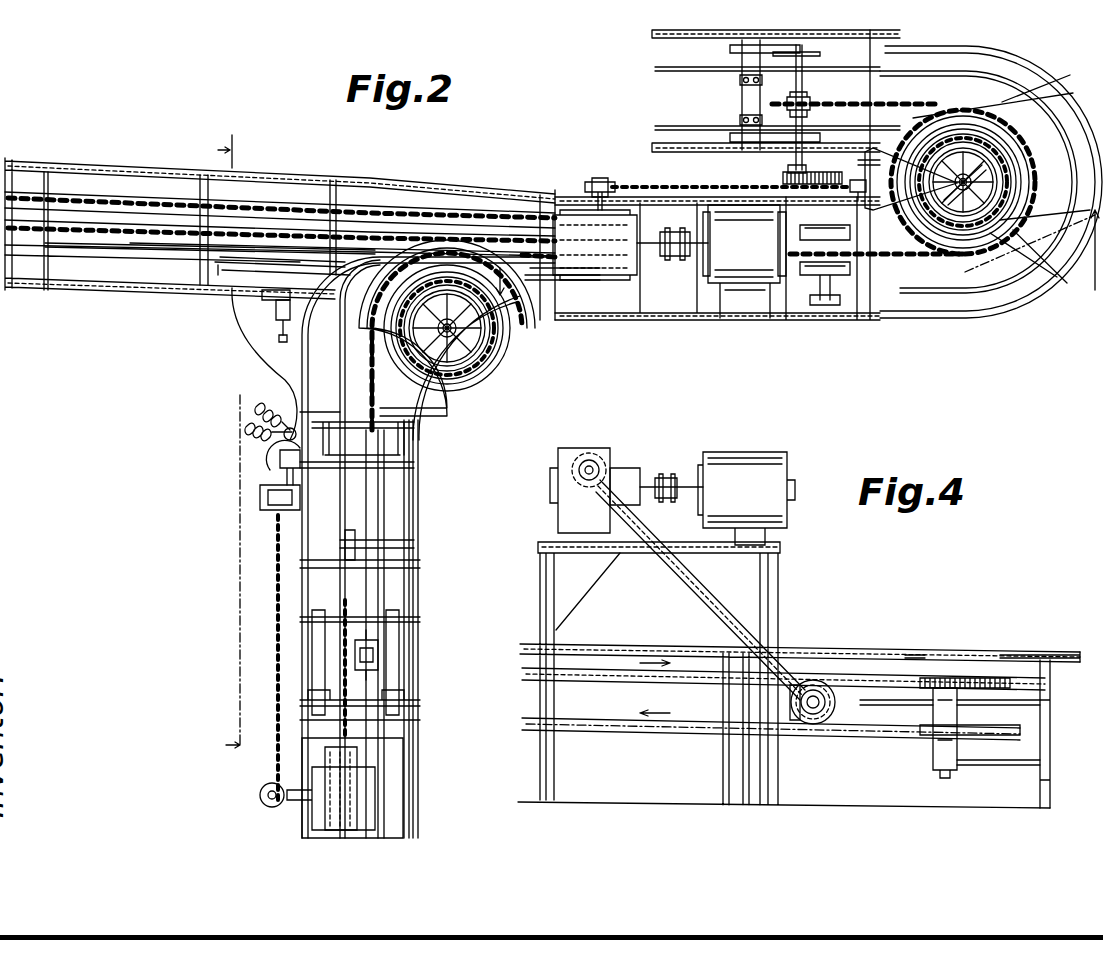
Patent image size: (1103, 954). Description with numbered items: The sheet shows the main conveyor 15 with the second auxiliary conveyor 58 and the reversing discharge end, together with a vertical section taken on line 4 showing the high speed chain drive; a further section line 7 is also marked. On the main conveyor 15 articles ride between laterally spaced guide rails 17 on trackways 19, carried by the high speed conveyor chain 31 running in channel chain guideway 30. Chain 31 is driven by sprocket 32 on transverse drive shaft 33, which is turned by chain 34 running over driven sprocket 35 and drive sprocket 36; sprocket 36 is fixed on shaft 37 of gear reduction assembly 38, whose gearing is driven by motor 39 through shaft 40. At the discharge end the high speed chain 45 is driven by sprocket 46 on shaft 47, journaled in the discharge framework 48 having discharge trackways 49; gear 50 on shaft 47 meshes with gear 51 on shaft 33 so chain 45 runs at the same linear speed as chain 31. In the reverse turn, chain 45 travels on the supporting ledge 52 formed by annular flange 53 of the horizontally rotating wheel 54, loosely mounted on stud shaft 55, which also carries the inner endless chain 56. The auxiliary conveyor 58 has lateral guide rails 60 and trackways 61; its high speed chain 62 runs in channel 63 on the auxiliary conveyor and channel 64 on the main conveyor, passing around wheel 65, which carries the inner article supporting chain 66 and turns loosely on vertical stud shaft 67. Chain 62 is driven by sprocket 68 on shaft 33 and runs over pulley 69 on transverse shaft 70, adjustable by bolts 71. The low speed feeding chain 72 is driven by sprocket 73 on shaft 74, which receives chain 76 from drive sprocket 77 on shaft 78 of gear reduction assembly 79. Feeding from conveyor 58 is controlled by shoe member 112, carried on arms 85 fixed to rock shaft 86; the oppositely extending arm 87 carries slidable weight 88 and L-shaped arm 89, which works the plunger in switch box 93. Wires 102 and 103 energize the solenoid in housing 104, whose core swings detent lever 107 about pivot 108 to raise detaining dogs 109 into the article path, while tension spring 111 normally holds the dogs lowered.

In FIG. 2, the section line 4 is at (797, 256).
In FIG. 2, the section line 7 is at (235, 446).
In FIG. 2, the main conveyor 15 is at (143, 184).
In FIG. 2, the article guide rails 17 is at (430, 168).
In FIG. 4, the article guide rails 17 is at (600, 643).
In FIG. 2, the trackways 19 is at (248, 180).
In FIG. 2, the channel chain guideway 30 is at (282, 190).
In FIG. 2, the high speed conveyor chain 31 is at (458, 204).
In FIG. 2, the sprocket 32 is at (848, 232).
In FIG. 2, the transverse drive shaft 33 is at (858, 305).
In FIG. 2, the chain 34 is at (672, 186).
In FIG. 4, the chain 34 is at (662, 570).
In FIG. 2, the driven sprocket 35 is at (852, 181).
In FIG. 4, the driven sprocket 35 is at (814, 725).
In FIG. 2, the drive sprocket 36 is at (590, 181).
In FIG. 4, the drive sprocket 36 is at (628, 467).
In FIG. 2, the shaft 37 is at (606, 180).
In FIG. 4, the shaft 37 is at (589, 460).
In FIG. 2, the gear reduction assembly 38 is at (605, 282).
In FIG. 4, the gear reduction assembly 38 is at (552, 488).
In FIG. 2, the motor 39 is at (755, 285).
In FIG. 4, the motor 39 is at (746, 498).
In FIG. 2, the shaft 40 is at (690, 255).
In FIG. 4, the shaft 40 is at (685, 470).
In FIG. 2, the high speed conveyor chain 45 is at (110, 242).
In FIG. 4, the high speed conveyor chain 45 is at (975, 677).
In FIG. 2, the sprocket 46 is at (812, 100).
In FIG. 2, the shaft 47 is at (793, 95).
In FIG. 2, the discharge framework 48 is at (705, 40).
In FIG. 4, the discharge framework 48 is at (1020, 652).
In FIG. 2, the discharge trackways 49 is at (668, 68).
In FIG. 4, the discharge trackways 49 is at (1045, 677).
In FIG. 2, the gear 50 is at (787, 170).
In FIG. 2, the gear 51 is at (812, 167).
In FIG. 2, the supporting ledge 52 is at (965, 118).
In FIG. 4, the supporting ledge 52 is at (998, 724).
In FIG. 2, the annular flange 53 is at (1000, 125).
In FIG. 4, the annular flange 53 is at (940, 677).
In FIG. 2, the horizontally rotating wheel 54 is at (965, 194).
In FIG. 4, the horizontally rotating wheel 54 is at (896, 695).
In FIG. 2, the stud shaft 55 is at (958, 166).
In FIG. 4, the stud shaft 55 is at (950, 776).
In FIG. 2, the inner endless chain 56 is at (1010, 176).
In FIG. 2, the second auxiliary conveyor 58 is at (430, 504).
In FIG. 2, the lateral article guide rails 60 is at (305, 376).
In FIG. 2, the trackways 61 is at (330, 360).
In FIG. 2, the high speed conveyor chain 62 is at (340, 355).
In FIG. 4, the high speed conveyor chain 62 is at (632, 665).
In FIG. 2, the channel 63 is at (370, 382).
In FIG. 2, the channel 64 is at (565, 284).
In FIG. 4, the channel 64 is at (608, 680).
In FIG. 2, the wheel 65 is at (470, 385).
In FIG. 2, the inner endless article supporting chain 66 is at (490, 340).
In FIG. 2, the vertical stud shaft 67 is at (447, 328).
In FIG. 2, the sprocket 68 is at (895, 270).
In FIG. 4, the sprocket 68 is at (798, 725).
In FIG. 2, the pulley 69 is at (380, 652).
In FIG. 2, the transverse shaft 70 is at (312, 656).
In FIG. 2, the adjusting bolts 71 is at (308, 680).
In FIG. 2, the low speed feeding conveyor chain 72 is at (355, 718).
In FIG. 2, the sprocket 73 is at (356, 548).
In FIG. 2, the shaft 74 is at (400, 572).
In FIG. 2, the chain 76 is at (278, 722).
In FIG. 2, the drive sprocket 77 is at (262, 802).
In FIG. 2, the shaft 78 is at (320, 795).
In FIG. 2, the gear reduction assembly 79 is at (360, 780).
In FIG. 2, the arms 85 is at (280, 261).
In FIG. 2, the rock shaft 86 is at (235, 277).
In FIG. 2, the arm 87 is at (293, 336).
In FIG. 2, the weight 88 is at (296, 317).
In FIG. 2, the L-shaped arm 89 is at (289, 297).
In FIG. 2, the switch box 93 is at (255, 300).
In FIG. 2, the wire 102 is at (257, 405).
In FIG. 2, the wire 103 is at (285, 436).
In FIG. 2, the solenoid housing 104 is at (258, 495).
In FIG. 2, the detent lever 107 is at (280, 465).
In FIG. 2, the pivot 108 is at (352, 470).
In FIG. 2, the detaining dogs 109 is at (383, 438).
In FIG. 2, the tension spring 111 is at (322, 399).
In FIG. 2, the shoe member 112 is at (200, 262).